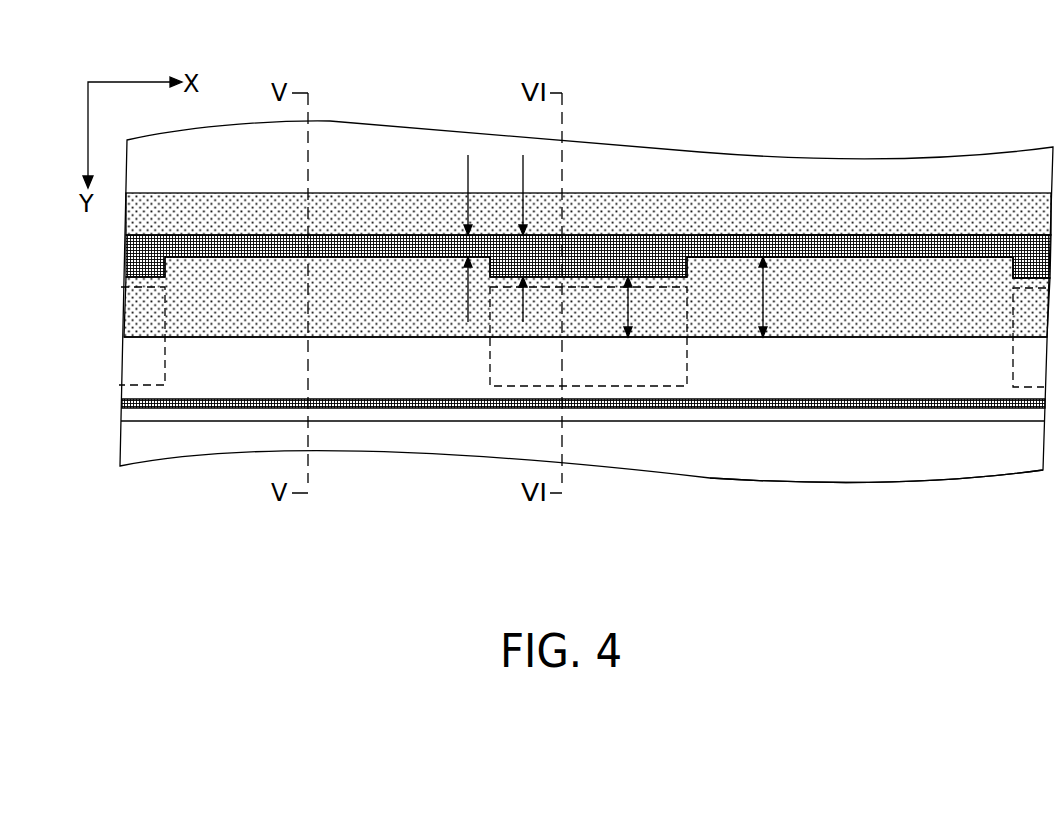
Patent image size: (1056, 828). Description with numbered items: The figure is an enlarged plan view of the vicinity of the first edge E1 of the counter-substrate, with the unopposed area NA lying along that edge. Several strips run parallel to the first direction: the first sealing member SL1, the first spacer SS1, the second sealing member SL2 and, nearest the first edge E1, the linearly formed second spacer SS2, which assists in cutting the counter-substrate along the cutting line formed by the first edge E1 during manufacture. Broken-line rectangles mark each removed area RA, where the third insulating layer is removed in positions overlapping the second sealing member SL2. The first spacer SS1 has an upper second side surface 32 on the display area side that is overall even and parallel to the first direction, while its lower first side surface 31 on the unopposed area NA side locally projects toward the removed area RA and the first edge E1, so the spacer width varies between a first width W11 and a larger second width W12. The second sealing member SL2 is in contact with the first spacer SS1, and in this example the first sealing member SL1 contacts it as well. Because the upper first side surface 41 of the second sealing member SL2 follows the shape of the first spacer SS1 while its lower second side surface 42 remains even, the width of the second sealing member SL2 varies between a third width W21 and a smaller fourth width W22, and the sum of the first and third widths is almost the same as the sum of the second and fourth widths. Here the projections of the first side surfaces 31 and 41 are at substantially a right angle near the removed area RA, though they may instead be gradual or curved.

The first sealing member SL1 is at (400, 207).
The second sealing member SL2 is at (405, 322).
The first spacer SS1 is at (780, 254).
The second spacer SS2 is at (635, 409).
The first side surface 31 is at (950, 268).
The second side surface 32 is at (955, 226).
The first side surface 41 is at (862, 248).
The second side surface 42 is at (866, 348).
The first edge E1 is at (757, 432).
The unopposed area NA is at (941, 474).
The removed area RA is at (165, 363).
The first width W11 is at (446, 238).
The second width W12 is at (502, 238).
The third width W21 is at (787, 297).
The fourth width W22 is at (653, 307).